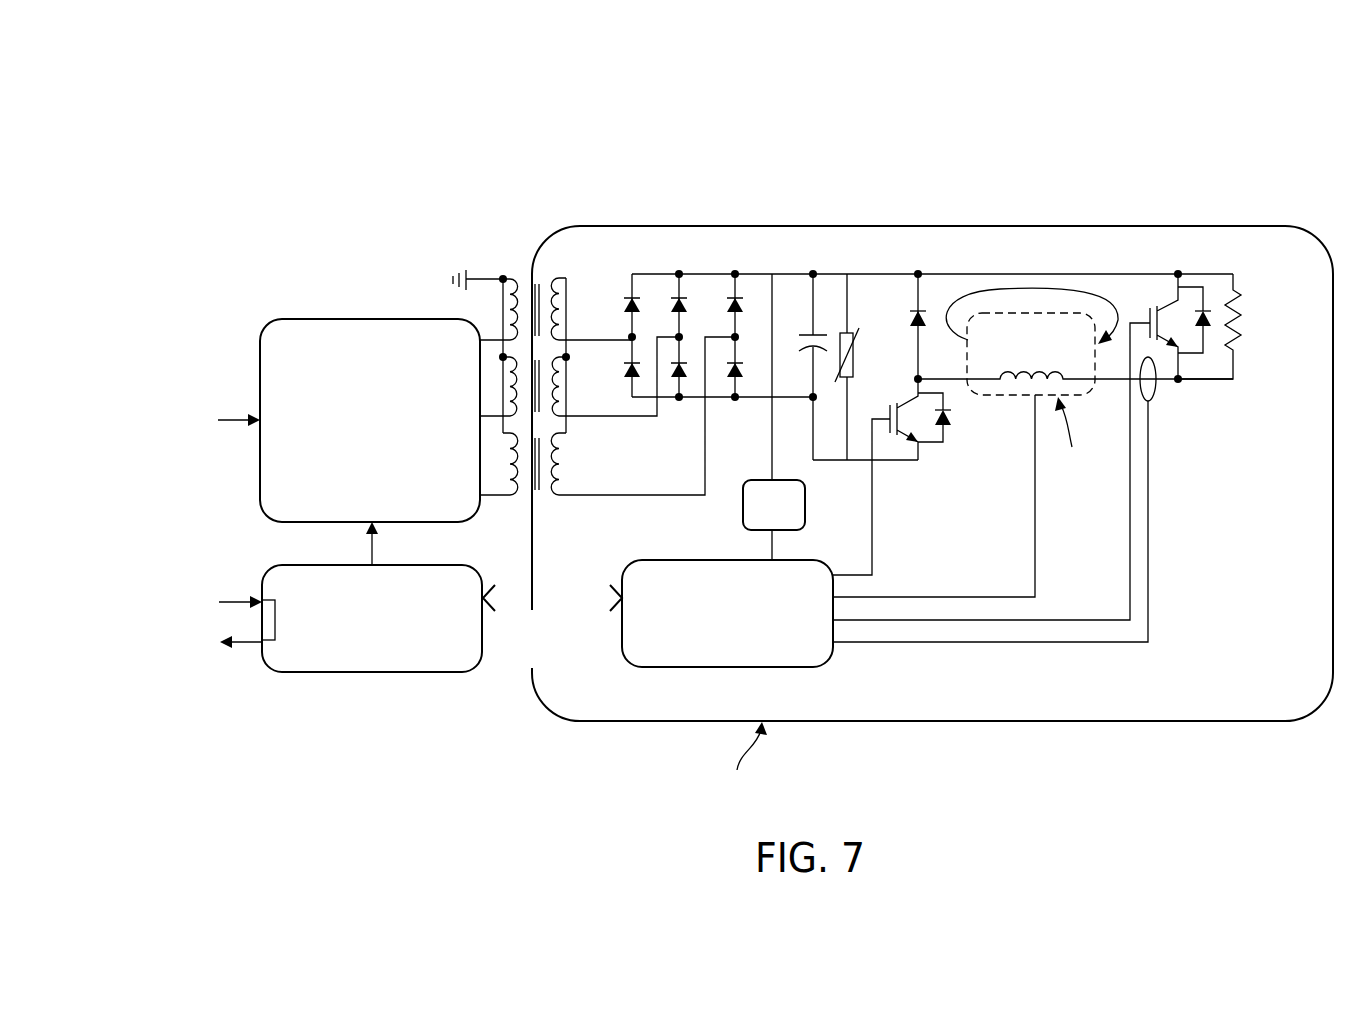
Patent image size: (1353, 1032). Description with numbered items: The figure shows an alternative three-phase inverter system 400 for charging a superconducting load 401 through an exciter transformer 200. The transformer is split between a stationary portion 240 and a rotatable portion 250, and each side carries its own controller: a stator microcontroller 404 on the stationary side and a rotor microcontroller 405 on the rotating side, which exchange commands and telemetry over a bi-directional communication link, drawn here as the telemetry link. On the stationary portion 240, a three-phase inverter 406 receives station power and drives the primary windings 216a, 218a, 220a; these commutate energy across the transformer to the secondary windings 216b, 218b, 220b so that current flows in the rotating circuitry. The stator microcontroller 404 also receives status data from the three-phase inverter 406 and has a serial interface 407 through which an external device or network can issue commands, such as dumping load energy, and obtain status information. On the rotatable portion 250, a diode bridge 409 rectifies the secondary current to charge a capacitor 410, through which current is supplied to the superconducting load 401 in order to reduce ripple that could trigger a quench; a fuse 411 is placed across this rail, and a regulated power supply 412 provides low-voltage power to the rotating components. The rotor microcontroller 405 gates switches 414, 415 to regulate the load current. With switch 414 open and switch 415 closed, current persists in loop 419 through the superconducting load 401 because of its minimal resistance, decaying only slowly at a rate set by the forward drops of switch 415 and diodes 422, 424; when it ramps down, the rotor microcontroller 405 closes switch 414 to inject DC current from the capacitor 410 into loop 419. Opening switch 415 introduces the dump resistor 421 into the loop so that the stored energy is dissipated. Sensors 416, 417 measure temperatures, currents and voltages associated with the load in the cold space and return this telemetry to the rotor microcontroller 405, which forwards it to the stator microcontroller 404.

The three-phase inverter system 400 is at (1217, 150).
The exciter transformer 200 is at (513, 258).
The stationary portion (stator) 240 is at (493, 203).
The rotatable portion (rotor) 250 is at (592, 237).
The primary winding 216a is at (508, 312).
The primary winding 218a is at (508, 388).
The primary winding 220a is at (508, 468).
The secondary winding 216b is at (560, 290).
The secondary winding 218b is at (555, 385).
The secondary winding 220b is at (555, 462).
The three-phase inverter 406 is at (300, 340).
The stator microcontroller 404 is at (375, 660).
The serial interface 407 is at (264, 656).
The rotor microcontroller 405 is at (736, 650).
The diode bridge 409 is at (623, 267).
The capacitor 410 is at (818, 330).
The fuse 411 is at (851, 334).
The regulated power supply 412 is at (743, 511).
The switch 414 is at (890, 404).
The diode 424 is at (926, 310).
The loop 419 is at (1017, 290).
The superconducting load 401 is at (1050, 380).
The sensor 417 is at (1030, 396).
The switch 415 is at (1151, 306).
The diode 422 is at (1207, 308).
The dump resistor 421 is at (1240, 347).
The sensor 416 is at (1156, 392).